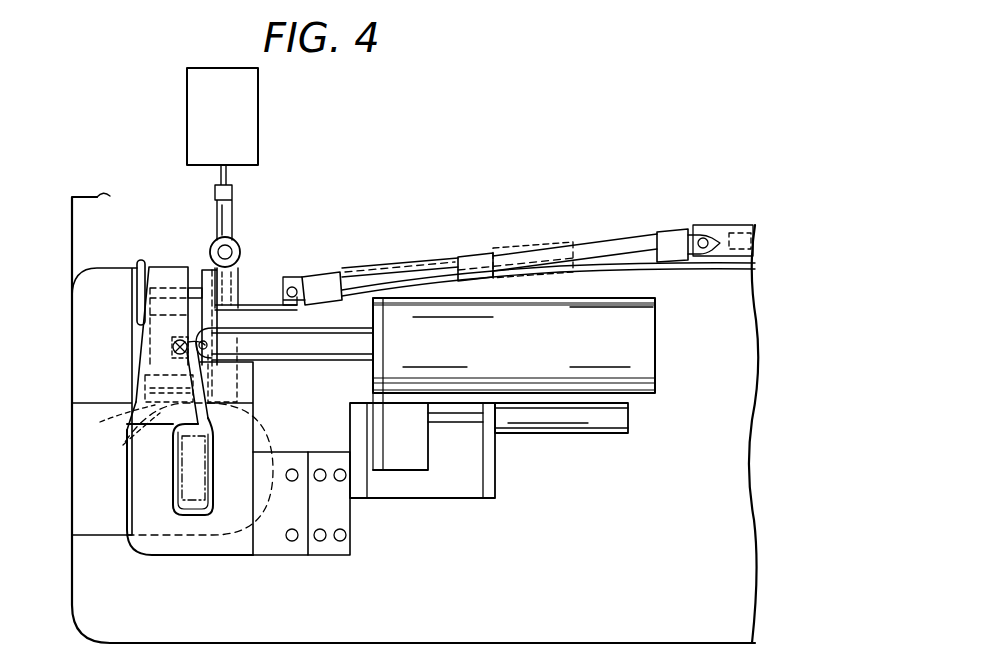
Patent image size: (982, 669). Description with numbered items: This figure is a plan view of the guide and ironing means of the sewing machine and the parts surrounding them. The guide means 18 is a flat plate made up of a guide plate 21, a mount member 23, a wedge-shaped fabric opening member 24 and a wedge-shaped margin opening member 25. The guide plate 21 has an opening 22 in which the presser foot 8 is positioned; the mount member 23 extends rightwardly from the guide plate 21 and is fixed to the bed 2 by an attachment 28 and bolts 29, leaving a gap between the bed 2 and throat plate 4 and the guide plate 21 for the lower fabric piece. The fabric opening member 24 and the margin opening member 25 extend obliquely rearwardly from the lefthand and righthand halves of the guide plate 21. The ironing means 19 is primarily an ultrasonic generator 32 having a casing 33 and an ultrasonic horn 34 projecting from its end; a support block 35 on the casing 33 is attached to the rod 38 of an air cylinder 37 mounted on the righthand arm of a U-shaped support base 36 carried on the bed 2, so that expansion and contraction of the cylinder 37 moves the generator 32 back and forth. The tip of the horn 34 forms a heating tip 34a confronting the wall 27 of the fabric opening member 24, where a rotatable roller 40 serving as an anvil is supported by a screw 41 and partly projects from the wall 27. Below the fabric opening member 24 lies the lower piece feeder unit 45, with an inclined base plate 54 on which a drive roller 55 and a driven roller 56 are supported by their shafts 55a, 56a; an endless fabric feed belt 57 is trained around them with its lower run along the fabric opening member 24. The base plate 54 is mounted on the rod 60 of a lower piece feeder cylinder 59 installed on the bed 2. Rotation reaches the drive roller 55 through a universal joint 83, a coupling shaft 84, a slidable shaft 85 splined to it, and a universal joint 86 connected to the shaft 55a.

The bed 2 is at (82, 612).
The throat plate 4 is at (76, 520).
The presser foot 8 is at (185, 474).
The guide means 18 is at (118, 474).
The ironing means 19 is at (443, 510).
The guide plate 21 is at (165, 555).
The opening 22 is at (184, 505).
The mount member 23 is at (276, 555).
The wedge-shaped fabric opening member 24 is at (160, 335).
The wedge-shaped margin opening member 25 is at (268, 404).
The wall 27 is at (212, 420).
The attachment 28 is at (326, 555).
The bolts 29 is at (292, 469).
The ultrasonic generator 32 is at (524, 361).
The casing 33 is at (640, 345).
The ultrasonic horn 34 is at (262, 338).
The heating tip 34a is at (225, 366).
The support block 35 is at (403, 462).
The support base 36 is at (486, 478).
The air cylinder 37 is at (596, 445).
The rod 38 is at (456, 424).
The rotatable roller 40 is at (172, 353).
The screw 41 is at (160, 378).
The lower piece feeder unit 45 is at (134, 254).
The base plate 54 is at (238, 320).
The drive roller 55 is at (138, 285).
The shaft 55a is at (203, 288).
The driven roller 56 is at (119, 417).
The shaft 56a is at (128, 436).
The fabric feed belt 57 is at (158, 266).
The lower piece feeder cylinder 59 is at (259, 113).
The rod 60 is at (228, 215).
The universal joint 83 is at (693, 218).
The coupling shaft 84 is at (618, 240).
The slidable shaft 85 is at (457, 258).
The universal joint 86 is at (312, 264).